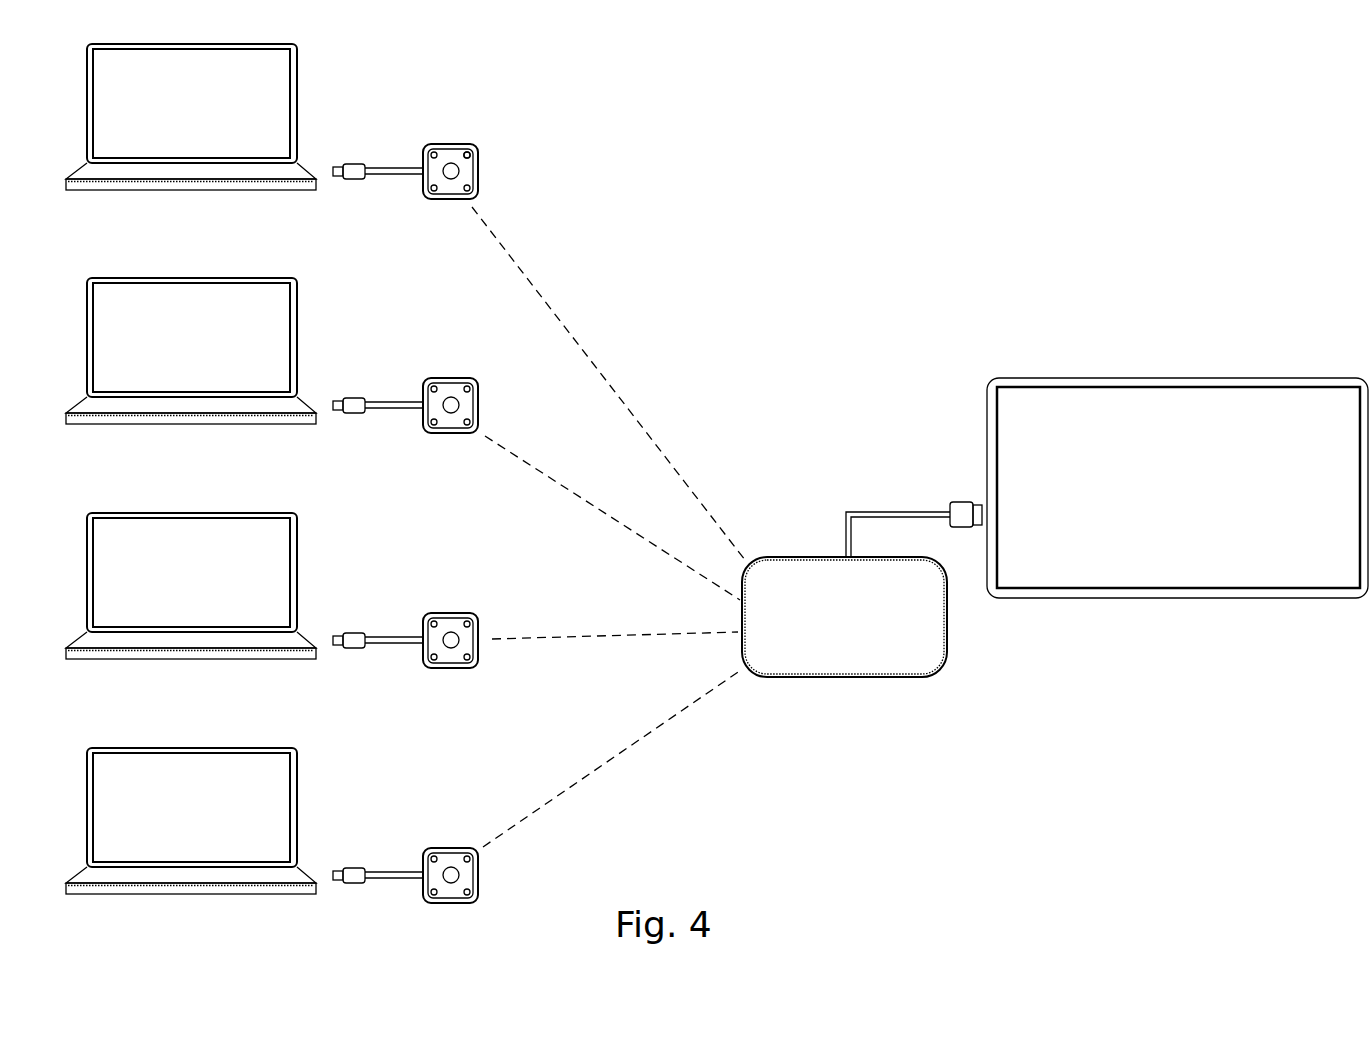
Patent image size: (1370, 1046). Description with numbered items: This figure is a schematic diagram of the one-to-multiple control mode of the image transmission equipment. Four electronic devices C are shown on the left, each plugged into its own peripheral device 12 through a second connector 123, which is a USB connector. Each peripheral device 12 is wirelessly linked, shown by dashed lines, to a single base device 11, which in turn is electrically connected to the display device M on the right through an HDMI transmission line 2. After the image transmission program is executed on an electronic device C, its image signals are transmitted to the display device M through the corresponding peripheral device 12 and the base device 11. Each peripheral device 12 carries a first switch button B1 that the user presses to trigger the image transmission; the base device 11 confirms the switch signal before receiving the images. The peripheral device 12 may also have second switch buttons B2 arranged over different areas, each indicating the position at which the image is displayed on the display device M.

The base device 11 is at (760, 678).
The peripheral device 12 is at (450, 200).
The second connector 123 is at (356, 165).
The first switch button B1 is at (459, 171).
The second switch button B2 is at (476, 148).
The electronic device C is at (180, 190).
The display device M is at (1117, 570).
The HDMI transmission line 2 is at (963, 502).